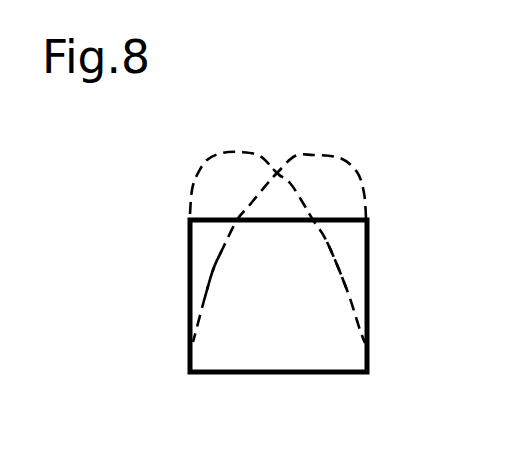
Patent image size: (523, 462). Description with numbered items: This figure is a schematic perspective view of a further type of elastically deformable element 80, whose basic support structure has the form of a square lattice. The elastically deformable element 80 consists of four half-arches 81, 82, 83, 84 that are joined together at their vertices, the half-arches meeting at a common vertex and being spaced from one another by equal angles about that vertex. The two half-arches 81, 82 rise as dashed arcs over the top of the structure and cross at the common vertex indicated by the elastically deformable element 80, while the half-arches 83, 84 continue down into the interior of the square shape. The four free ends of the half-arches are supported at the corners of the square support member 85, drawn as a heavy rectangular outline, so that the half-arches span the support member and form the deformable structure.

The elastically deformable element 80 is at (276, 158).
The half-arch 81 is at (220, 154).
The half-arch 82 is at (352, 169).
The half-arch 83 is at (334, 248).
The half-arch 84 is at (217, 250).
The square support member 85 is at (369, 309).